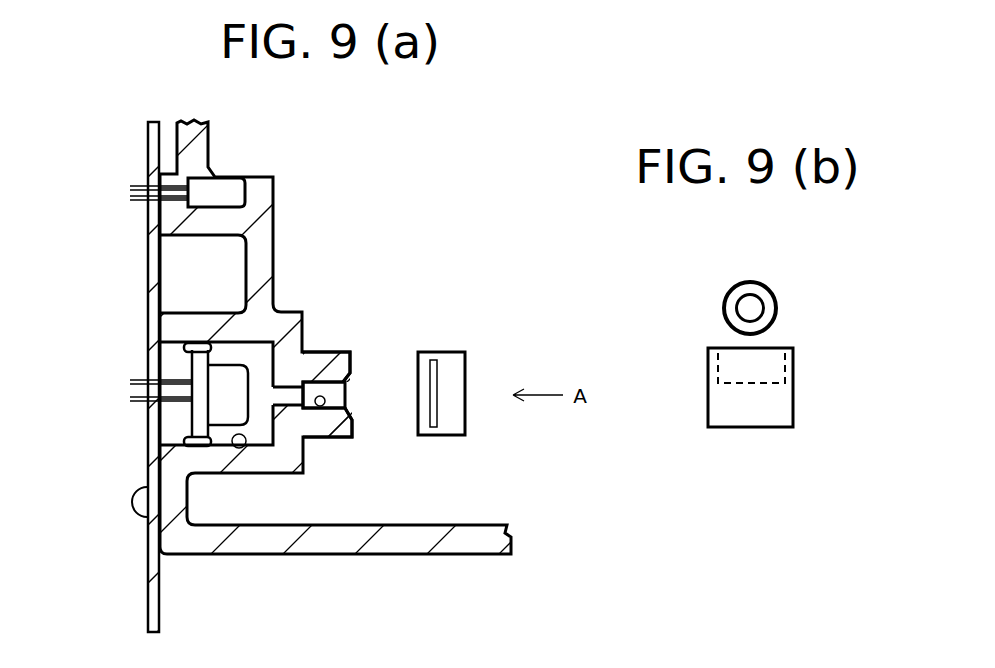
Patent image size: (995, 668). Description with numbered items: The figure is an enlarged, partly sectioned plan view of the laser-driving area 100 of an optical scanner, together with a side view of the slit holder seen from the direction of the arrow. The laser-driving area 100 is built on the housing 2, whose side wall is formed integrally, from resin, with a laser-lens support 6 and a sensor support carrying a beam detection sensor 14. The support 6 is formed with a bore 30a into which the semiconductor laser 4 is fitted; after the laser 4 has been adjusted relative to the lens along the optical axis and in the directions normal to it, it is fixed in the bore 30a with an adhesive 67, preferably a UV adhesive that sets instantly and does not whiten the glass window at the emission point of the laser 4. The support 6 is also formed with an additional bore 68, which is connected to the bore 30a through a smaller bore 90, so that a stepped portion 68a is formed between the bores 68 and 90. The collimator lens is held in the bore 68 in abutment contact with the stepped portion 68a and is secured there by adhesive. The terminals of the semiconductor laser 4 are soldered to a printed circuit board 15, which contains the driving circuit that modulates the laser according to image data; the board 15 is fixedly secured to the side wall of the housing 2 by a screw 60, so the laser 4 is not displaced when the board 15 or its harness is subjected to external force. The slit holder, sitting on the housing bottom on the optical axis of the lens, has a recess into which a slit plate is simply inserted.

The laser-driving area 100 is at (448, 184).
The printed circuit board 15 is at (155, 425).
The laser-lens support 6 is at (173, 331).
The housing 2 is at (390, 537).
The beam detection sensor 14 is at (222, 190).
The semiconductor laser 4 is at (196, 369).
The adhesive 67 is at (185, 350).
The screw 60 is at (133, 498).
The bore 30a is at (236, 449).
The smaller bore 90 is at (285, 396).
The bore 68 is at (316, 402).
The stepped portion 68a is at (303, 407).